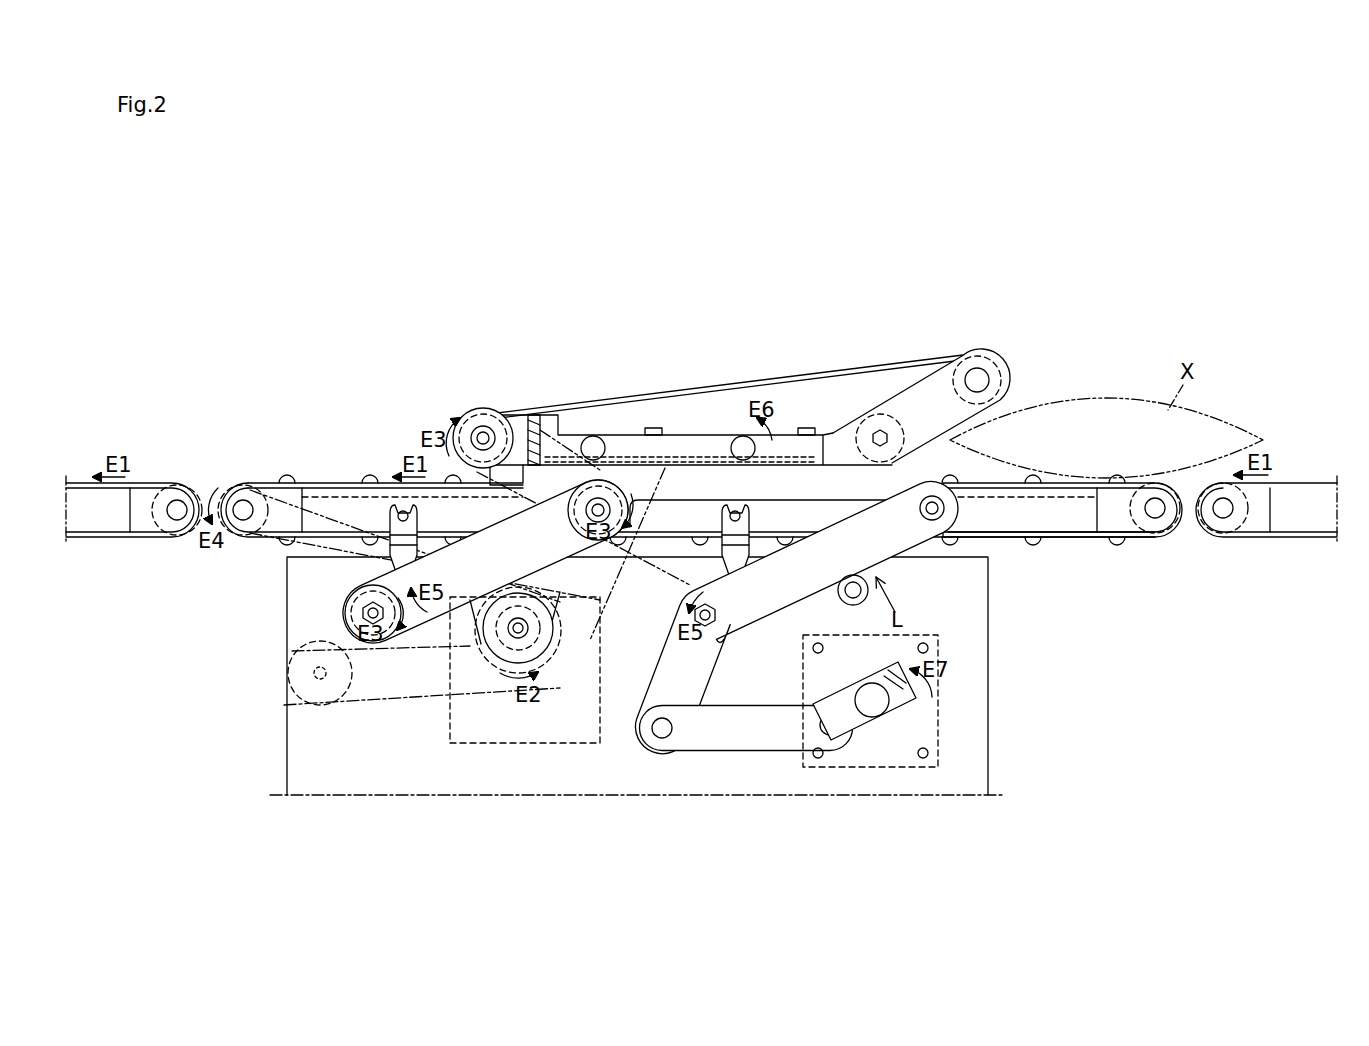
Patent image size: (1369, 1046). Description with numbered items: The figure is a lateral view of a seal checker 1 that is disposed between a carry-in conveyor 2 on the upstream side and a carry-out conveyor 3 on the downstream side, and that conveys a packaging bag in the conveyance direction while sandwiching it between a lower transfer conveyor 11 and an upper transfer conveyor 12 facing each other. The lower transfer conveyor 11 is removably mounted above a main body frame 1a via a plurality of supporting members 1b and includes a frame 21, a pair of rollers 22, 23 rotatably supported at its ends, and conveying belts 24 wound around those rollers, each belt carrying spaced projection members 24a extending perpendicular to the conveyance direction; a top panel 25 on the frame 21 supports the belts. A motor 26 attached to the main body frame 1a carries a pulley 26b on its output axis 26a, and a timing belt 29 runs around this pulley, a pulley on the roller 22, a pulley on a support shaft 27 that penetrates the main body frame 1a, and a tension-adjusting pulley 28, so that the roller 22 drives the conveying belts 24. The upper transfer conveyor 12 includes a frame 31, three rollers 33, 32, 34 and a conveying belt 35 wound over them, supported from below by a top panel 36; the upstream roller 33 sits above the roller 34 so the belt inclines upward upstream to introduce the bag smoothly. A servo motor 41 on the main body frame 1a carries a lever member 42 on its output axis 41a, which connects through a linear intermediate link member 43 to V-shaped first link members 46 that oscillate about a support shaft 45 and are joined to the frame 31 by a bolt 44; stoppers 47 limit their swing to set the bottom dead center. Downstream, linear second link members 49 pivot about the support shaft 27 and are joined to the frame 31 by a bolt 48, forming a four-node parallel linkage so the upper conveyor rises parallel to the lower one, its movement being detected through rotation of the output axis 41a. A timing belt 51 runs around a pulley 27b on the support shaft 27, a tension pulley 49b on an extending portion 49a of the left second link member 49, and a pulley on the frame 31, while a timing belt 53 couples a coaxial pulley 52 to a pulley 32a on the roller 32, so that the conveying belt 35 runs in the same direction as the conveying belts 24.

The seal checker 1 is at (664, 523).
The main body frame 1a is at (993, 672).
The supporting members 1b is at (410, 538).
The carry-in conveyor 2 is at (1297, 460).
The carry-out conveyor 3 is at (140, 457).
The lower transfer conveyor 11 is at (1062, 560).
The upper transfer conveyor 12 is at (726, 403).
The frame 21 is at (1065, 518).
The roller 22 is at (243, 540).
The roller 23 is at (1157, 532).
The conveying belts 24 is at (692, 509).
The projection members 24a is at (1135, 576).
The top panel 25 is at (1010, 490).
The motor 26 is at (556, 732).
The output axis 26a is at (534, 644).
The pulley 26b is at (510, 672).
The support shaft 27 is at (345, 609).
The pulley 27b is at (368, 610).
The pulley 28 is at (290, 672).
The timing belt 29 is at (398, 699).
The frame 31 is at (691, 433).
The roller 32 is at (458, 415).
The pulley 32a is at (462, 423).
The roller 33 is at (1003, 368).
The roller 34 is at (878, 430).
The conveying belt 35 is at (775, 378).
The top panel 36 is at (700, 446).
The servo motor 41 is at (875, 679).
The output axis 41a is at (874, 714).
The lever member 42 is at (858, 722).
The intermediate link member 43 is at (728, 718).
The bolt 44 is at (782, 618).
The support shaft 45 is at (717, 623).
The first link members 46 is at (675, 660).
The stoppers 47 is at (840, 600).
The bolt 48 is at (592, 512).
The second link members 49 is at (496, 627).
The extending portion 49a is at (480, 608).
The pulley 49b is at (500, 637).
The timing belt 51 is at (587, 589).
The pulley 52 is at (626, 498).
The timing belt 53 is at (541, 441).